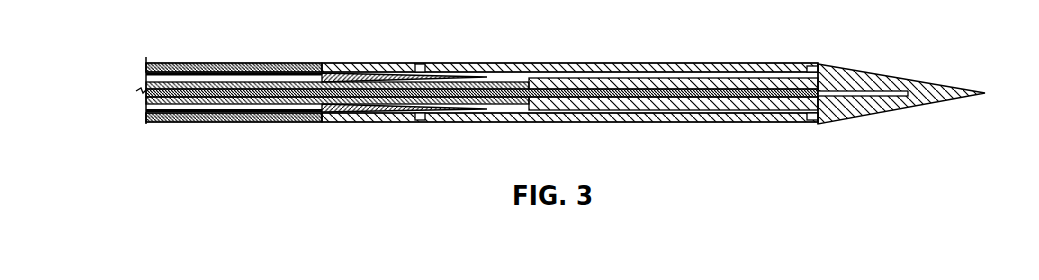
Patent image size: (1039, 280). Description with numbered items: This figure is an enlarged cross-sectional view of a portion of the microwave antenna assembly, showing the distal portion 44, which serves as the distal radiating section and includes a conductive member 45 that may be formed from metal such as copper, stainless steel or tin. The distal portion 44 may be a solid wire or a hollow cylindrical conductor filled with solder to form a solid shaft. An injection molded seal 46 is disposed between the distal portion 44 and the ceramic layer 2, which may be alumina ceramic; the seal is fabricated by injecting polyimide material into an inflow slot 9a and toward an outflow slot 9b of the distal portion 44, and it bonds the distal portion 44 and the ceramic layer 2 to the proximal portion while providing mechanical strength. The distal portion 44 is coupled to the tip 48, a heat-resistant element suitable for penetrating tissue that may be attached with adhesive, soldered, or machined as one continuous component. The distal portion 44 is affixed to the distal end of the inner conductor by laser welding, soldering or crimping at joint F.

The ceramic layer 2 is at (657, 64).
The inflow slot 9a is at (419, 123).
The outflow slot 9b is at (812, 121).
The distal portion 44 is at (704, 142).
The conductive member 45 is at (864, 100).
The injection molded seal 46 is at (561, 123).
The tip 48 is at (898, 80).
The joint F is at (822, 65).